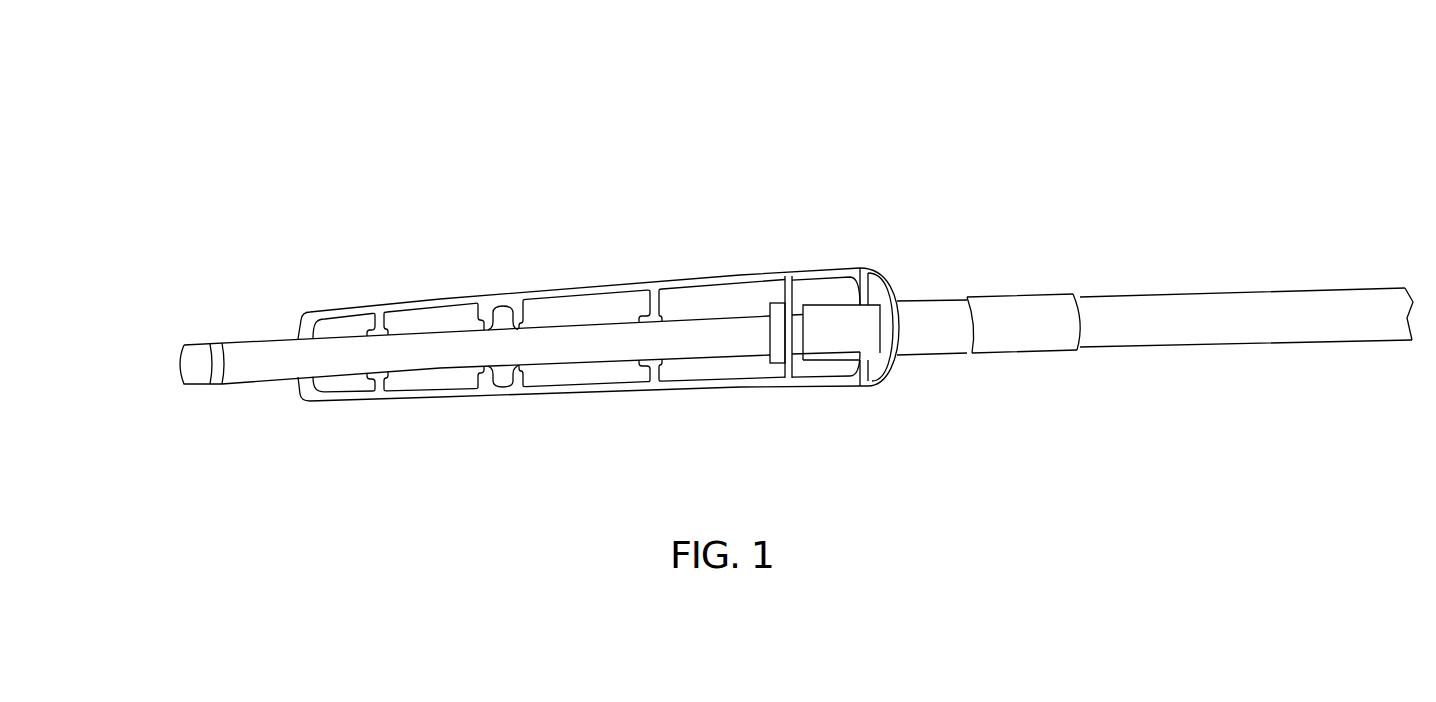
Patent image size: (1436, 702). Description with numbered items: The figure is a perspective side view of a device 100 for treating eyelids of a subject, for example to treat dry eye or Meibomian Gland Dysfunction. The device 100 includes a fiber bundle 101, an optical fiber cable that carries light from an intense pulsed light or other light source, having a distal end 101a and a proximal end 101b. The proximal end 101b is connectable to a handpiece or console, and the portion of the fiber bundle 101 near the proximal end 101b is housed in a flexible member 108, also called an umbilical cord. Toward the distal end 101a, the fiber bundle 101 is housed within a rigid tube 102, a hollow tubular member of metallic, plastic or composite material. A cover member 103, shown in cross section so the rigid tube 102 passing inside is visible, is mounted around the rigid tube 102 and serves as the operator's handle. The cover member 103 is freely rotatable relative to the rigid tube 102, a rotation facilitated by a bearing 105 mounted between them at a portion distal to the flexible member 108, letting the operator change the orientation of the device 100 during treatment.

The device 100 is at (1133, 118).
The fiber bundle 101 is at (991, 364).
The distal end 101a is at (193, 358).
The proximal end 101b is at (1378, 313).
The rigid tube 102 is at (448, 347).
The cover member 103 is at (703, 302).
The bearing 105 is at (785, 318).
The flexible member 108 is at (1236, 323).